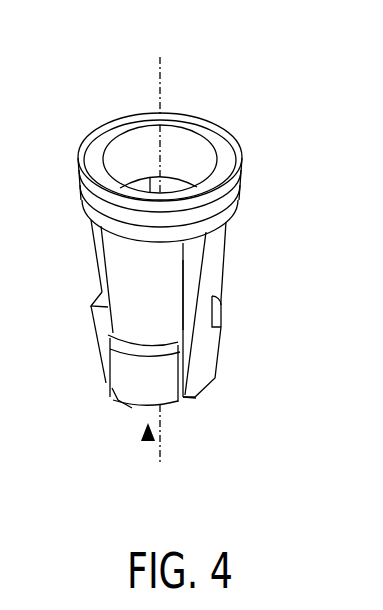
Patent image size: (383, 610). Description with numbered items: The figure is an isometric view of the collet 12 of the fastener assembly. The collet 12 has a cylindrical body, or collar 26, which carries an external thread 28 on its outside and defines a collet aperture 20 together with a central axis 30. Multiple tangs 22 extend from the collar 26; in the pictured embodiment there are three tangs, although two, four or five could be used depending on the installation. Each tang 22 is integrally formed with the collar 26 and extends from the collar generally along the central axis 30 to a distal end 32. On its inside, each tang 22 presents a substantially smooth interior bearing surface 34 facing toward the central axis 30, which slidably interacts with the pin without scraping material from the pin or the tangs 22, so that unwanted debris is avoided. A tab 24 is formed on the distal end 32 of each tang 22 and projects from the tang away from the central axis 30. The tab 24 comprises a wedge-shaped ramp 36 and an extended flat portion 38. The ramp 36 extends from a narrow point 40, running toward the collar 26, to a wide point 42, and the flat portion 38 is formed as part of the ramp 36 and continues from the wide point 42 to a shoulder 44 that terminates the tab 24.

The collet 12 is at (104, 79).
The collet aperture 20 is at (182, 142).
The tang 22 is at (228, 234).
The tab 24 is at (200, 373).
The collar 26 is at (220, 143).
The external thread 28 is at (243, 178).
The central axis 30 is at (167, 67).
The distal end 32 is at (148, 441).
The interior bearing surface 34 is at (190, 270).
The wedge-shaped ramp 36 is at (127, 410).
The flat portion 38 is at (123, 380).
The narrow point 40 is at (192, 400).
The wide point 42 is at (216, 379).
The shoulder 44 is at (224, 315).